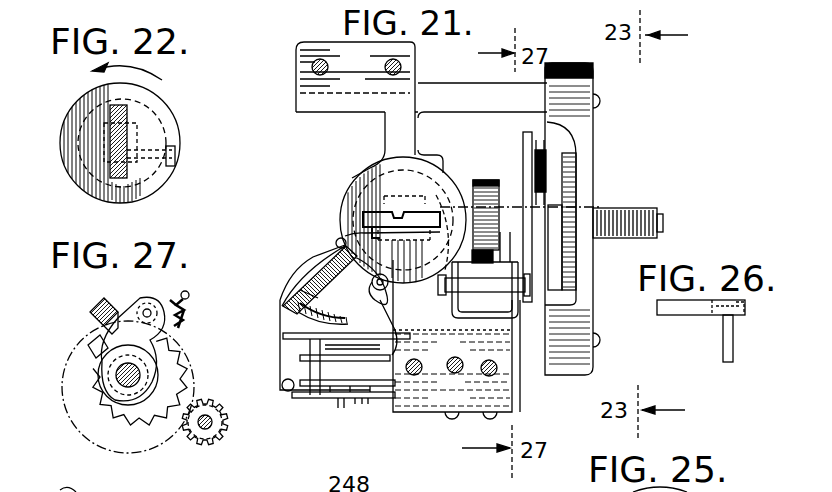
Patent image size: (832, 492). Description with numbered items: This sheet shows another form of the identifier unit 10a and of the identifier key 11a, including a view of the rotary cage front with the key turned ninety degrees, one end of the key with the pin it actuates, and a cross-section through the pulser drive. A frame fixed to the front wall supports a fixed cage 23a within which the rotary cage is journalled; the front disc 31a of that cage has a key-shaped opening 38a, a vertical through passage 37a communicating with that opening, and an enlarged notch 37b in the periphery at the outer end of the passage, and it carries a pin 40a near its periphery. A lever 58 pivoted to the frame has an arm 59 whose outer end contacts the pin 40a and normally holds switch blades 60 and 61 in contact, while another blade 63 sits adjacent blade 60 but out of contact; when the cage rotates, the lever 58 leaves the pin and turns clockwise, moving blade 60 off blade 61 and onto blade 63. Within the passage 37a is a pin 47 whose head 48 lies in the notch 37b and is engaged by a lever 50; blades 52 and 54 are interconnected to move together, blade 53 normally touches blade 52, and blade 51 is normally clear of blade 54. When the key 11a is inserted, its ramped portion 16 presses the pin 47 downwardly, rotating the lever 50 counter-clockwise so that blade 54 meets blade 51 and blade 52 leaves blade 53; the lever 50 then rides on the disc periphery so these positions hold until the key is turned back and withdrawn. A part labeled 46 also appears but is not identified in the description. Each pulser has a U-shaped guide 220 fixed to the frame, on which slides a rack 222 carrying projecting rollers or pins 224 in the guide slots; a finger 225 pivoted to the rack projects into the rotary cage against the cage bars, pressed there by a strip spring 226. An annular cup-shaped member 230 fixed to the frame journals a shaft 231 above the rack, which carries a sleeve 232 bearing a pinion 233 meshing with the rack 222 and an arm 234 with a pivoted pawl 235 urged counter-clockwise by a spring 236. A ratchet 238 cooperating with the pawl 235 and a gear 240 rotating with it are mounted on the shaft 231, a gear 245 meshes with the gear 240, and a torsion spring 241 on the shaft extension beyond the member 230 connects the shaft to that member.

In FIG. 21, the identifier unit 10a is at (310, 163).
In FIG. 26, the identifier key 11a is at (688, 318).
In FIG. 26, the ramped portion 16 is at (740, 322).
In FIG. 21, the fixed cage 23a is at (352, 178).
In FIG. 22, the front disc 31a is at (161, 110).
In FIG. 21, the front disc 31a is at (350, 187).
In FIG. 21, the vertical through passage 37a is at (345, 236).
In FIG. 21, the enlarged notch 37b is at (302, 303).
In FIG. 22, the key shaped opening 38a is at (113, 168).
In FIG. 21, the key shaped opening 38a is at (413, 208).
In FIG. 21, the pin 40a is at (340, 262).
In FIG. 21, the pivot pin 46 is at (300, 292).
In FIG. 26, the pin 47 is at (731, 345).
In FIG. 21, the pin 47 is at (363, 214).
In FIG. 21, the head 48 is at (372, 279).
In FIG. 21, the lever 50 is at (372, 300).
In FIG. 21, the switch blade 51 is at (330, 356).
In FIG. 21, the switch blade 52 is at (282, 390).
In FIG. 21, the switch blade 53 is at (325, 390).
In FIG. 21, the switch blade 54 is at (298, 318).
In FIG. 21, the lever 58 is at (283, 346).
In FIG. 21, the arm 59 is at (335, 242).
In FIG. 21, the switch blade 60 is at (358, 404).
In FIG. 21, the switch blade 61 is at (341, 406).
In FIG. 21, the switch blade 63 is at (364, 404).
In FIG. 21, the U-shaped guide 220 is at (518, 312).
In FIG. 21, the rack 222 is at (497, 273).
In FIG. 21, the projecting rollers or pins 224 is at (530, 285).
In FIG. 21, the finger 225 is at (447, 228).
In FIG. 21, the strip spring 226 is at (472, 405).
In FIG. 21, the annular cup-shaped member 230 is at (588, 133).
In FIG. 27, the shaft 231 is at (125, 383).
In FIG. 21, the sleeve 232 is at (517, 217).
In FIG. 21, the pinion 233 is at (490, 180).
In FIG. 27, the arm 234 is at (170, 292).
In FIG. 21, the arm 234 is at (527, 133).
In FIG. 27, the pivoted pawl 235 is at (115, 328).
In FIG. 27, the spring 236 is at (180, 327).
In FIG. 27, the ratchet 238 is at (100, 385).
In FIG. 27, the gear 240 is at (157, 423).
In FIG. 21, the gear 240 is at (572, 215).
In FIG. 21, the torsion spring 241 is at (642, 207).
In FIG. 27, the gear 245 is at (217, 423).